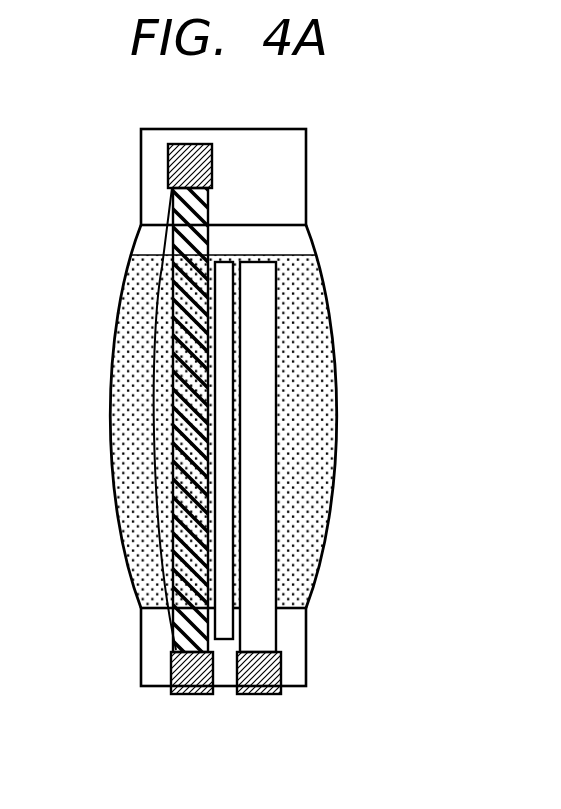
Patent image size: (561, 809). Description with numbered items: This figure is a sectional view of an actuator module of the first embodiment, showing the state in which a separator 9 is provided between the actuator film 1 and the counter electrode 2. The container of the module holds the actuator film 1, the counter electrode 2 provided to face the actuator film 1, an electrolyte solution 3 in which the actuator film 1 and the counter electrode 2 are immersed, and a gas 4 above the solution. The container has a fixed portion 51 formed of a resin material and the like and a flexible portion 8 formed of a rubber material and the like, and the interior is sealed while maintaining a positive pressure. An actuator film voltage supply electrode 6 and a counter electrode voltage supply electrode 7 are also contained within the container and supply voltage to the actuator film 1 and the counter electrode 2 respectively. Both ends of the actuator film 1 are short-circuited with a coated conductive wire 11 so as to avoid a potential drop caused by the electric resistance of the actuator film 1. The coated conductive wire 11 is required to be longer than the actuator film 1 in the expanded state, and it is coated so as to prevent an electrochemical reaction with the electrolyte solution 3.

The actuator film 1 is at (183, 308).
The counter electrode 2 is at (268, 303).
The electrolyte solution 3 is at (135, 540).
The gas 4 is at (296, 238).
The actuator film voltage supply electrode 6 is at (188, 695).
The counter electrode voltage supply electrode 7 is at (262, 695).
The flexible portion 8 is at (337, 442).
The separator 9 is at (225, 527).
The coated conductive wire 11 is at (153, 380).
The fixed portion 51 is at (298, 657).